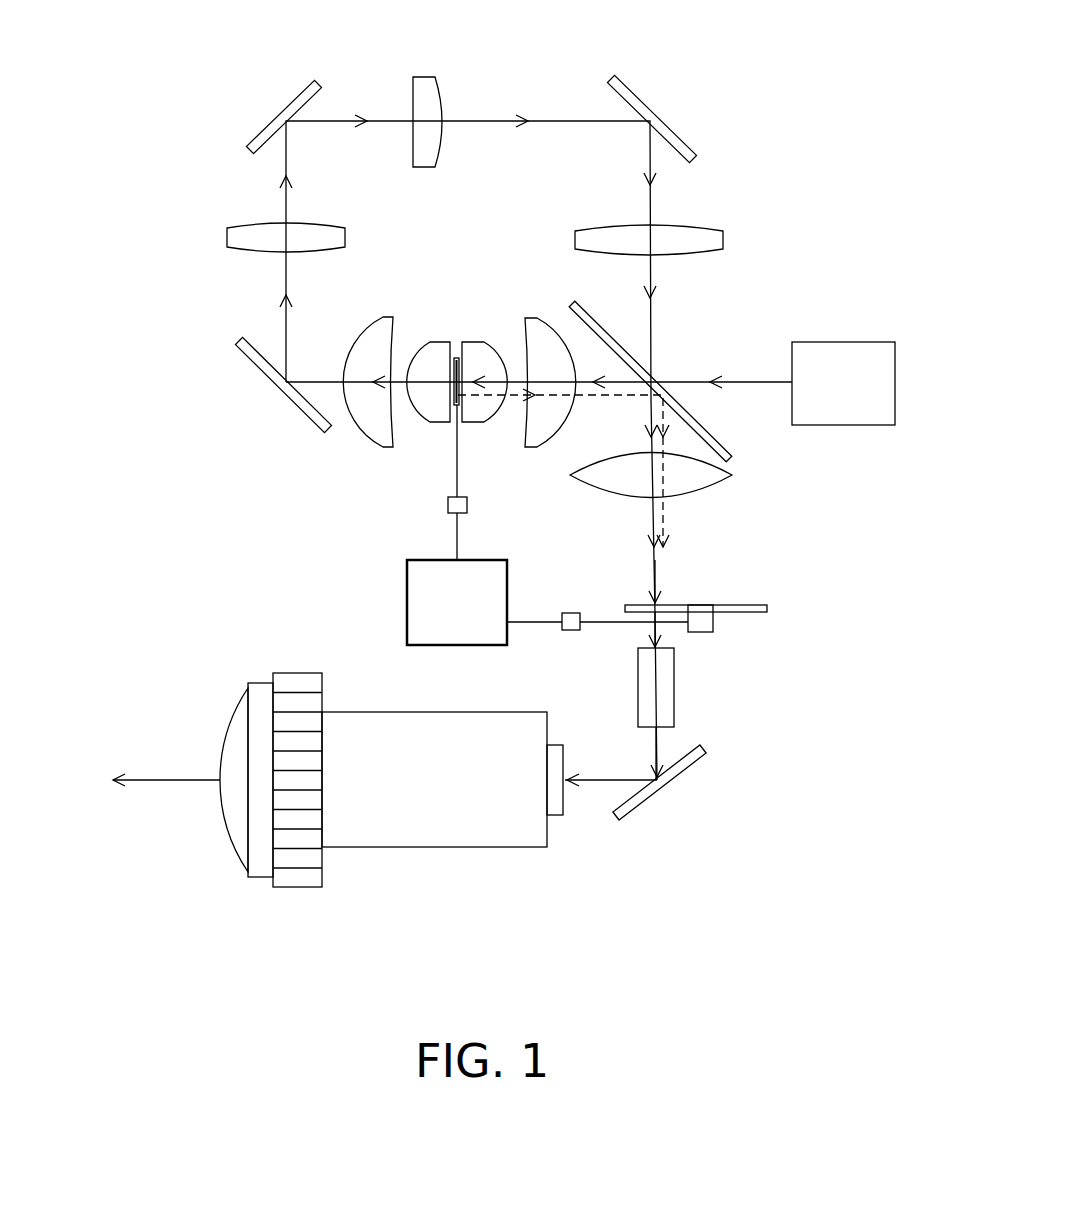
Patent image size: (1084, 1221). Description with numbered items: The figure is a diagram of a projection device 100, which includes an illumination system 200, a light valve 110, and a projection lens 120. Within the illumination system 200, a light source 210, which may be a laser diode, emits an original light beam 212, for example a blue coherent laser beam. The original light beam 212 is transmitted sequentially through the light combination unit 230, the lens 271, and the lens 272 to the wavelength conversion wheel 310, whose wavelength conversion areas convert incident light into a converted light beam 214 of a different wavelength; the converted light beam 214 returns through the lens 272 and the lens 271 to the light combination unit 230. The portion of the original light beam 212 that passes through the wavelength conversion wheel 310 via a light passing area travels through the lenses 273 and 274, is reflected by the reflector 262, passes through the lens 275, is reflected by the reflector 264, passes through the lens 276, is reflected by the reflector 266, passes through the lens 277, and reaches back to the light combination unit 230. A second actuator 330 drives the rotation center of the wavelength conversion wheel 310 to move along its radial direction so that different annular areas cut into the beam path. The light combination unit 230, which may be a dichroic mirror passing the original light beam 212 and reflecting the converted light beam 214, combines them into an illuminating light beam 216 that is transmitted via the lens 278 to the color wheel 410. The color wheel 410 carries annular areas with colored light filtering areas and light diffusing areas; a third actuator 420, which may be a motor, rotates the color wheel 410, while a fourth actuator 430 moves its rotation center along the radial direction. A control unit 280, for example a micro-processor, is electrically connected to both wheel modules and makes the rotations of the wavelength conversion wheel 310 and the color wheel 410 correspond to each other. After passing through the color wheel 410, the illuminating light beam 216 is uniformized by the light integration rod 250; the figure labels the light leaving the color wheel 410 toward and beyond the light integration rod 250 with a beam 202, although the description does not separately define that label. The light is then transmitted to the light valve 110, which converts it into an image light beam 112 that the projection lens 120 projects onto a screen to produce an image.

The projection device 100 is at (822, 931).
The light valve 110 is at (657, 788).
The image light beam 112 is at (598, 782).
The projection lens 120 is at (430, 828).
The illumination system 200 is at (783, 673).
The combined light beam 202 is at (660, 628).
The light source 210 is at (847, 425).
The original light beam 212 is at (395, 373).
The converted light beam 214 is at (482, 400).
The illuminating light beam 216 is at (657, 575).
The light combination unit 230 is at (733, 462).
The light integration rod 250 is at (645, 683).
The reflector 262 is at (243, 350).
The reflector 264 is at (305, 90).
The reflector 266 is at (678, 140).
The lens 271 is at (533, 320).
The lens 272 is at (470, 352).
The lens 273 is at (435, 405).
The lens 274 is at (380, 427).
The lens 275 is at (228, 240).
The lens 276 is at (427, 88).
The lens 277 is at (723, 242).
The lens 278 is at (592, 478).
The control unit 280 is at (480, 560).
The wavelength conversion wheel 310 is at (457, 345).
The second actuator 330 is at (452, 515).
The color wheel 410 is at (637, 605).
The third actuator 420 is at (713, 625).
The fourth actuator 430 is at (570, 613).